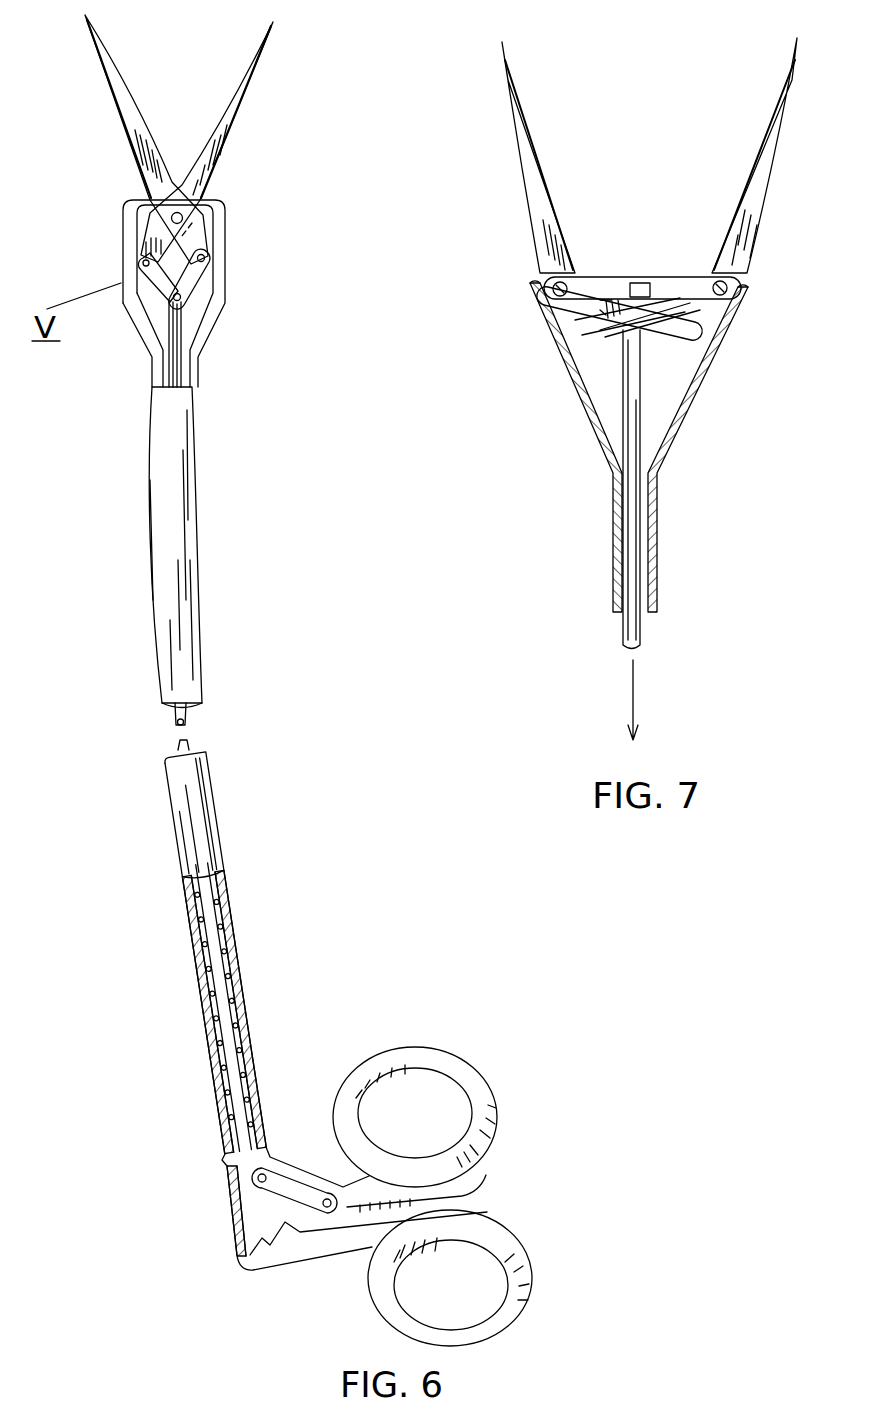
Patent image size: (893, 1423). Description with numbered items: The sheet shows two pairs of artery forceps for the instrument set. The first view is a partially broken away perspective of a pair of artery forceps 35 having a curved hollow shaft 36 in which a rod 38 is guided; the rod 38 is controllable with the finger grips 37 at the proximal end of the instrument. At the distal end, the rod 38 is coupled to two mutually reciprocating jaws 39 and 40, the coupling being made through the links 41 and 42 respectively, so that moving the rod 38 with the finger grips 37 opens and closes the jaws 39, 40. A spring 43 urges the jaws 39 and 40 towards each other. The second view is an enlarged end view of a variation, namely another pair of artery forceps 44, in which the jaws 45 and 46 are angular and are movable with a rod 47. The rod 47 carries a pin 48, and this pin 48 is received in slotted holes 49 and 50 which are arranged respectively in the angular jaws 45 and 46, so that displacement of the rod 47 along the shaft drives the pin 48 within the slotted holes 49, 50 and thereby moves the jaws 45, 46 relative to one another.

In FIG. 6, the artery forceps 35 is at (225, 738).
In FIG. 6, the curved hollow shaft 36 is at (178, 657).
In FIG. 6, the finger grips 37 is at (477, 1093).
In FIG. 6, the rod 38 is at (222, 882).
In FIG. 6, the jaw 39 is at (113, 98).
In FIG. 6, the jaw 40 is at (205, 163).
In FIG. 6, the link 41 is at (190, 300).
In FIG. 6, the link 42 is at (163, 288).
In FIG. 6, the spring 43 is at (233, 997).
In FIG. 7, the artery forceps 44 is at (683, 497).
In FIG. 7, the jaw 45 is at (597, 150).
In FIG. 7, the jaw 46 is at (757, 172).
In FIG. 7, the rod 47 is at (633, 543).
In FIG. 7, the pin 48 is at (638, 285).
In FIG. 7, the slotted hole 49 is at (677, 340).
In FIG. 7, the slotted hole 50 is at (617, 340).